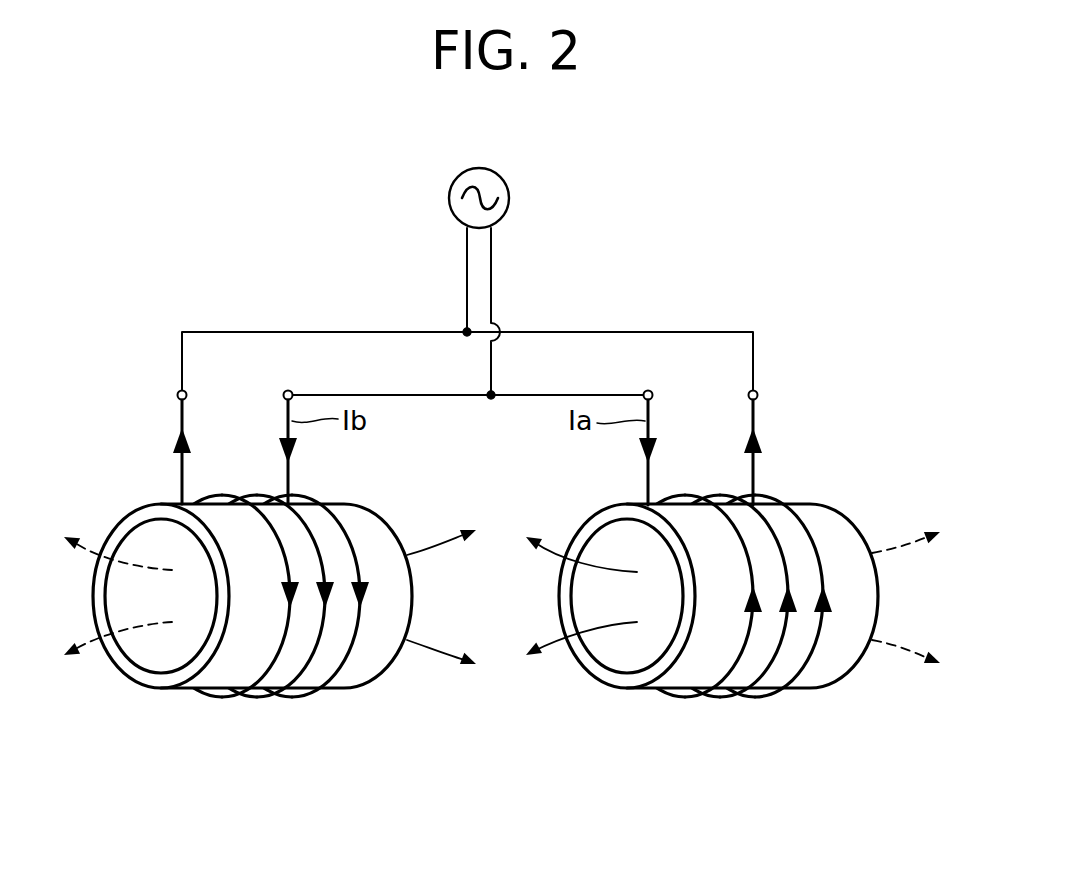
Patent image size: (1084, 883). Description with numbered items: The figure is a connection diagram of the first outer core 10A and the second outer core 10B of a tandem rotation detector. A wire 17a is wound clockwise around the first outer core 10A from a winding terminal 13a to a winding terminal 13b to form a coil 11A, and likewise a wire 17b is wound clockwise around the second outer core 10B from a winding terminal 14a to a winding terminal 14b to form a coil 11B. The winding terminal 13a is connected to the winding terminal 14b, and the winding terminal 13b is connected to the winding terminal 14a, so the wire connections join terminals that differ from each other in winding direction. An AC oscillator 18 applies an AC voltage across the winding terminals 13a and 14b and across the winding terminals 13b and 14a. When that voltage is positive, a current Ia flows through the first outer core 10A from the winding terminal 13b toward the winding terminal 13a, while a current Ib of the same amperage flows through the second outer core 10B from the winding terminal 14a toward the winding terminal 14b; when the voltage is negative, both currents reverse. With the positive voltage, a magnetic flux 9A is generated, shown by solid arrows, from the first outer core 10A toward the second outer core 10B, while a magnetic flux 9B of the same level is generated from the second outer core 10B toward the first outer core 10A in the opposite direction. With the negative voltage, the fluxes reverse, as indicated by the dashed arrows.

The AC oscillator 18 is at (509, 199).
The winding terminal 14b is at (181, 389).
The winding terminal 14a is at (288, 389).
The winding terminal 13b is at (649, 389).
The winding terminal 13a is at (754, 389).
The second outer core 10B is at (272, 570).
The first outer core 10A is at (734, 571).
The coil 11B is at (287, 602).
The coil 11A is at (743, 607).
The magnetic flux 9B is at (407, 640).
The magnetic flux 9A is at (560, 642).
The wire 17b is at (342, 676).
The wire 17a is at (803, 672).